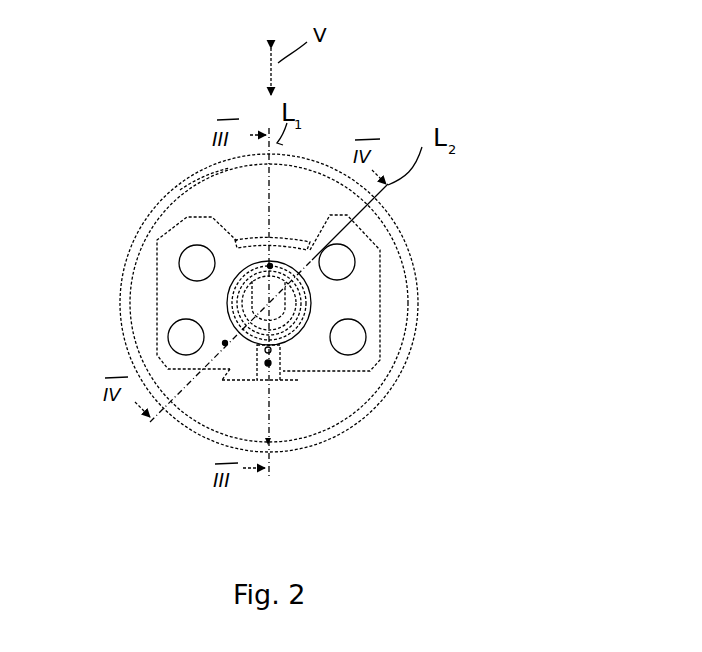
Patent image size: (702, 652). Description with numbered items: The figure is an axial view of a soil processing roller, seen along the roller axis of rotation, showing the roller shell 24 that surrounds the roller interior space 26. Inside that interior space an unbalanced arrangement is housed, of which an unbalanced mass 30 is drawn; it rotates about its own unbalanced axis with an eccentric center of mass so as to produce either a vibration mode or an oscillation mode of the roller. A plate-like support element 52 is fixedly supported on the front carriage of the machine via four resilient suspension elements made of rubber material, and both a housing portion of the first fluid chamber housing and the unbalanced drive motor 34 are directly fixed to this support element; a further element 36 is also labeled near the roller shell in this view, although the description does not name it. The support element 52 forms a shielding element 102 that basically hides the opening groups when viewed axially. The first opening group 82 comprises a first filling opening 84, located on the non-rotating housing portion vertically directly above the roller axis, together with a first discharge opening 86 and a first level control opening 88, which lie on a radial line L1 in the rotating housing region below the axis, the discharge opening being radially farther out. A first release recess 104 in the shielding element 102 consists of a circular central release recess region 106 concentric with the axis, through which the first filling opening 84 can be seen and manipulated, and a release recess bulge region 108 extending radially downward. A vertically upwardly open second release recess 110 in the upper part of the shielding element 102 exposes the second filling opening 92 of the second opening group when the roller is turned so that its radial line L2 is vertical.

The roller shell 24 is at (122, 311).
The interior space 26 is at (283, 426).
The unbalanced mass 30 is at (235, 362).
The unbalanced drive motor 34 is at (225, 343).
The central recess 36 is at (237, 335).
The plate-like support element 52 is at (168, 278).
The first opening group 82 is at (293, 378).
The first filling opening 84 is at (270, 264).
The first discharge opening 86 is at (293, 380).
The first level control opening 88 is at (282, 352).
The second filling opening 92 is at (312, 258).
The shielding element 102 is at (340, 258).
The first release recess 104 is at (313, 314).
The central release recess region 106 is at (313, 298).
The release recess bulge region 108 is at (295, 379).
The second release recess 110 is at (207, 182).